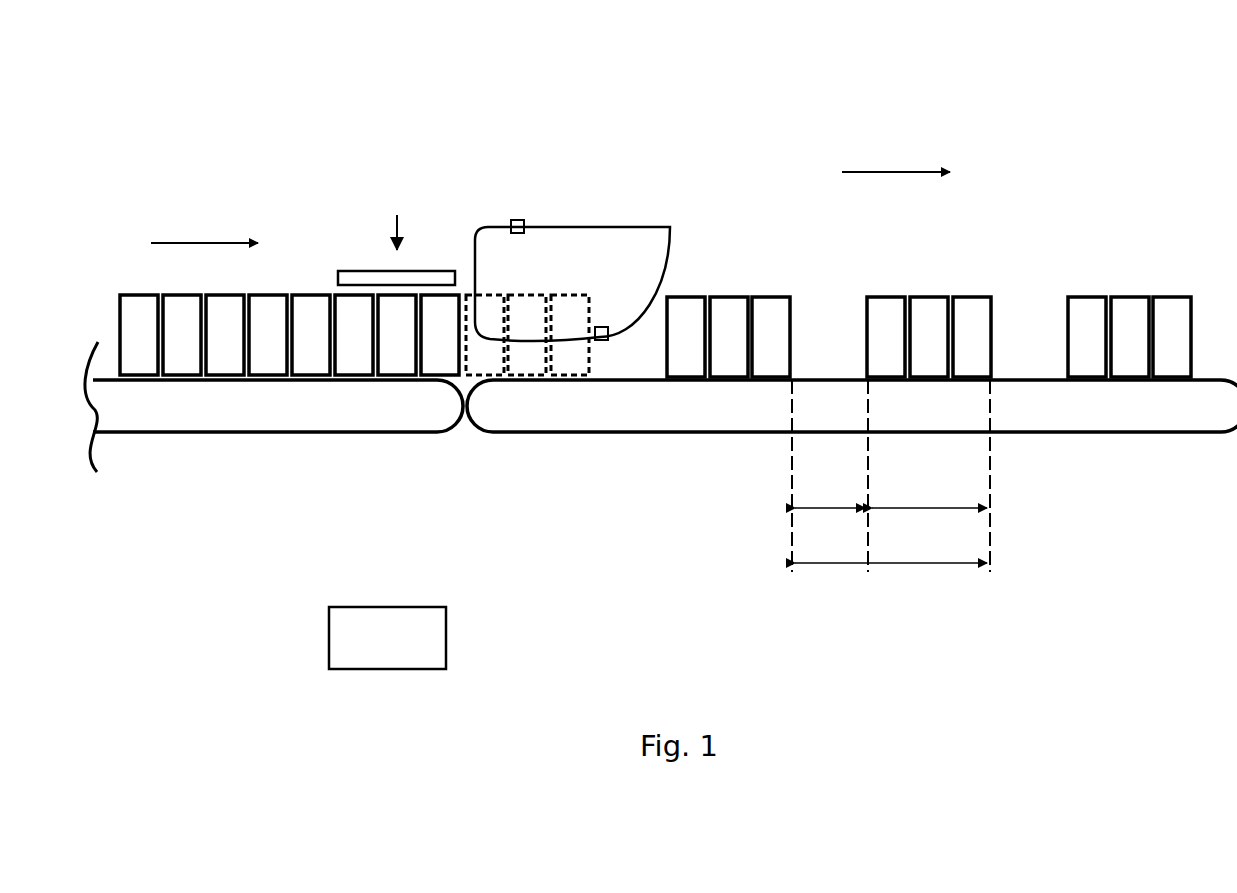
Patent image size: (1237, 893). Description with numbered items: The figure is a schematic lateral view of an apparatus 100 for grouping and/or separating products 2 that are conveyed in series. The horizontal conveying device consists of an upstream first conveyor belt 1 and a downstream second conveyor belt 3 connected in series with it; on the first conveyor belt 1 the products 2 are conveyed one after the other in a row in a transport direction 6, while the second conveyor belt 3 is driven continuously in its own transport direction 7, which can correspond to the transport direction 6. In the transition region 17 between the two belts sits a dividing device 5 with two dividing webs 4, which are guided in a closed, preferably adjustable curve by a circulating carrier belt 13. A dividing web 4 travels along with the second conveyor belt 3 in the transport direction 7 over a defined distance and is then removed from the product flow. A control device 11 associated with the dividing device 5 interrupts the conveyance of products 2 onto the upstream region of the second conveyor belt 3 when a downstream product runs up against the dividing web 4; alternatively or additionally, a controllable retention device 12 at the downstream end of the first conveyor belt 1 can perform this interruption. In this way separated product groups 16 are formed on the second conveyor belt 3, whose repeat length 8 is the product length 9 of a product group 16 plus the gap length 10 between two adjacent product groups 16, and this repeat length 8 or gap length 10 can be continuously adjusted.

The apparatus 100 is at (347, 65).
The first conveyor belt 1 is at (340, 432).
The products 2 is at (354, 335).
The second conveyor belt 3 is at (770, 433).
The dividing web 4 is at (517, 222).
The dividing device 5 is at (572, 284).
The transport direction of the first conveyor 6 is at (204, 230).
The transport direction of the second conveyor belt 7 is at (896, 159).
The repeat length 8 is at (891, 552).
The product length 9 is at (929, 497).
The gap length 10 is at (830, 497).
The control device 11 is at (329, 622).
The retention device 12 is at (383, 270).
The circulating carrier belt 13 is at (592, 227).
The product groups 16 is at (1193, 278).
The transition region 17 is at (598, 452).